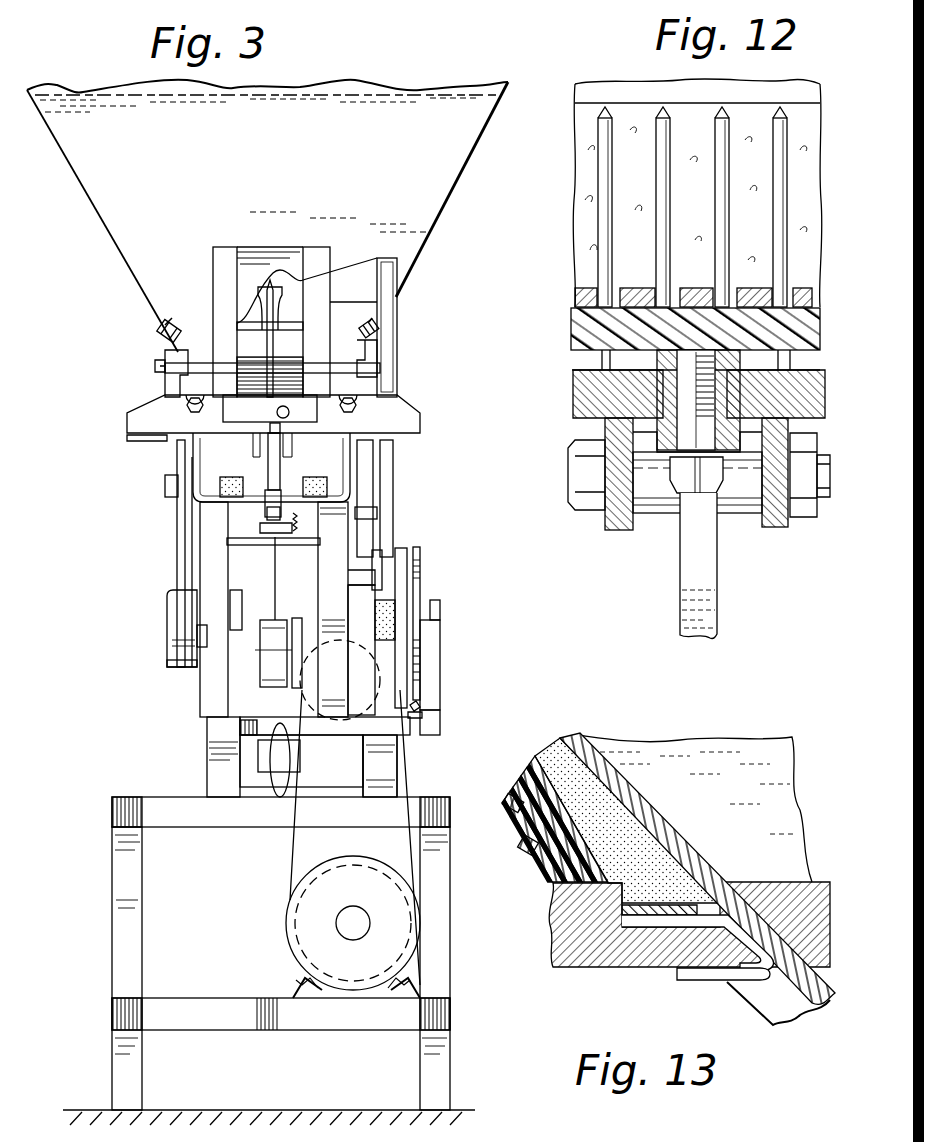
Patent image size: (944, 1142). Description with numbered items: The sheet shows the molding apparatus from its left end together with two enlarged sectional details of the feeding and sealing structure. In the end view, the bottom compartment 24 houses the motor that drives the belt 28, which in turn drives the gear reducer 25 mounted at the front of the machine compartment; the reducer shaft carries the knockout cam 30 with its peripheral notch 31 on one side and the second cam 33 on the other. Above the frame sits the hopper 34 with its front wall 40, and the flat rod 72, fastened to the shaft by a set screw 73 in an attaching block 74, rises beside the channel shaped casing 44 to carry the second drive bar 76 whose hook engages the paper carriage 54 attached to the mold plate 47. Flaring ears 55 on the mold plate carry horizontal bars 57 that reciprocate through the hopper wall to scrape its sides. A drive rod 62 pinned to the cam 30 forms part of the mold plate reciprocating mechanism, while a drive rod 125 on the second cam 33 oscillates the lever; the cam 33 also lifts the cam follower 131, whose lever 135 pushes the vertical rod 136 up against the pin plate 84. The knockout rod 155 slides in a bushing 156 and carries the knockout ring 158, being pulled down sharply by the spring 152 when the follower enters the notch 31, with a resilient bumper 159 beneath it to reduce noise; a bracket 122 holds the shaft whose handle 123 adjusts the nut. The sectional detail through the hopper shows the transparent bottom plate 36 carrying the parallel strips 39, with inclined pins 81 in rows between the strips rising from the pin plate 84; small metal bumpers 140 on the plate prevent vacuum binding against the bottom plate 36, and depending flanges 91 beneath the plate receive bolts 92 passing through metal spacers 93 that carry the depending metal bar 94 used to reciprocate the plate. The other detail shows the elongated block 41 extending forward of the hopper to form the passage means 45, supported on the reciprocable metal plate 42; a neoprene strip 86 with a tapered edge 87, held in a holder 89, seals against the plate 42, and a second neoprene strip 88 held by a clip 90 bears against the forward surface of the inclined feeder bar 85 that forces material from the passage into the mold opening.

In FIG. 3, the bottom compartment 24 is at (112, 880).
In FIG. 3, the gear reducer 25 is at (372, 606).
In FIG. 3, the belt 28 is at (296, 850).
In FIG. 3, the knockout cam 30 is at (410, 615).
In FIG. 3, the notch 31 is at (418, 688).
In FIG. 3, the second cam 33 is at (290, 680).
In FIG. 3, the hopper 34 is at (298, 169).
In FIG. 12, the bottom plate 36 is at (574, 342).
In FIG. 12, the parallel coplanar strips 39 is at (633, 288).
In FIG. 12, the front wall 40 is at (622, 90).
In FIG. 13, the elongated block 41 is at (530, 788).
In FIG. 13, the metal plate 42 is at (592, 968).
In FIG. 3, the channel shaped casing 44 is at (193, 448).
In FIG. 13, the passage means 45 is at (726, 793).
In FIG. 3, the mold plate 47 is at (340, 366).
In FIG. 3, the carriage 54 is at (180, 385).
In FIG. 3, the ears 55 is at (162, 334).
In FIG. 3, the horizontal bar 57 is at (165, 322).
In FIG. 3, the drive rod 62 is at (432, 688).
In FIG. 3, the rod 72 is at (177, 541).
In FIG. 3, the set screw 73 is at (175, 660).
In FIG. 3, the attaching block 74 is at (172, 632).
In FIG. 3, the second drive bar 76 is at (178, 464).
In FIG. 12, the pins 81 is at (710, 148).
In FIG. 12, the pin plate 84 is at (590, 398).
In FIG. 13, the feeder bar 85 is at (605, 790).
In FIG. 13, the neoprene strip 86 is at (506, 820).
In FIG. 13, the tapered edge 87 is at (552, 934).
In FIG. 13, the neoprene strip 88 is at (700, 895).
In FIG. 13, the holder 89 is at (516, 853).
In FIG. 13, the clip 90 is at (682, 980).
In FIG. 3, the depending flanges 91 is at (268, 455).
In FIG. 12, the depending flanges 91 is at (618, 530).
In FIG. 12, the bolts 92 is at (830, 490).
In FIG. 12, the metal spacer 93 is at (740, 513).
In FIG. 12, the depending metal bar 94 is at (712, 585).
In FIG. 3, the bracket 122 is at (270, 752).
In FIG. 3, the handle 123 is at (290, 768).
In FIG. 3, the drive rod 125 is at (272, 668).
In FIG. 3, the cam follower 131 is at (281, 609).
In FIG. 3, the lever 135 is at (262, 540).
In FIG. 3, the vertical rod 136 is at (280, 500).
In FIG. 12, the bumpers 140 is at (660, 361).
In FIG. 3, the spring 152 is at (428, 722).
In FIG. 3, the vertical rod 155 is at (394, 360).
In FIG. 3, the bushing 156 is at (393, 478).
In FIG. 3, the knockout ring 158 is at (252, 312).
In FIG. 3, the resilient bumper 159 is at (385, 622).